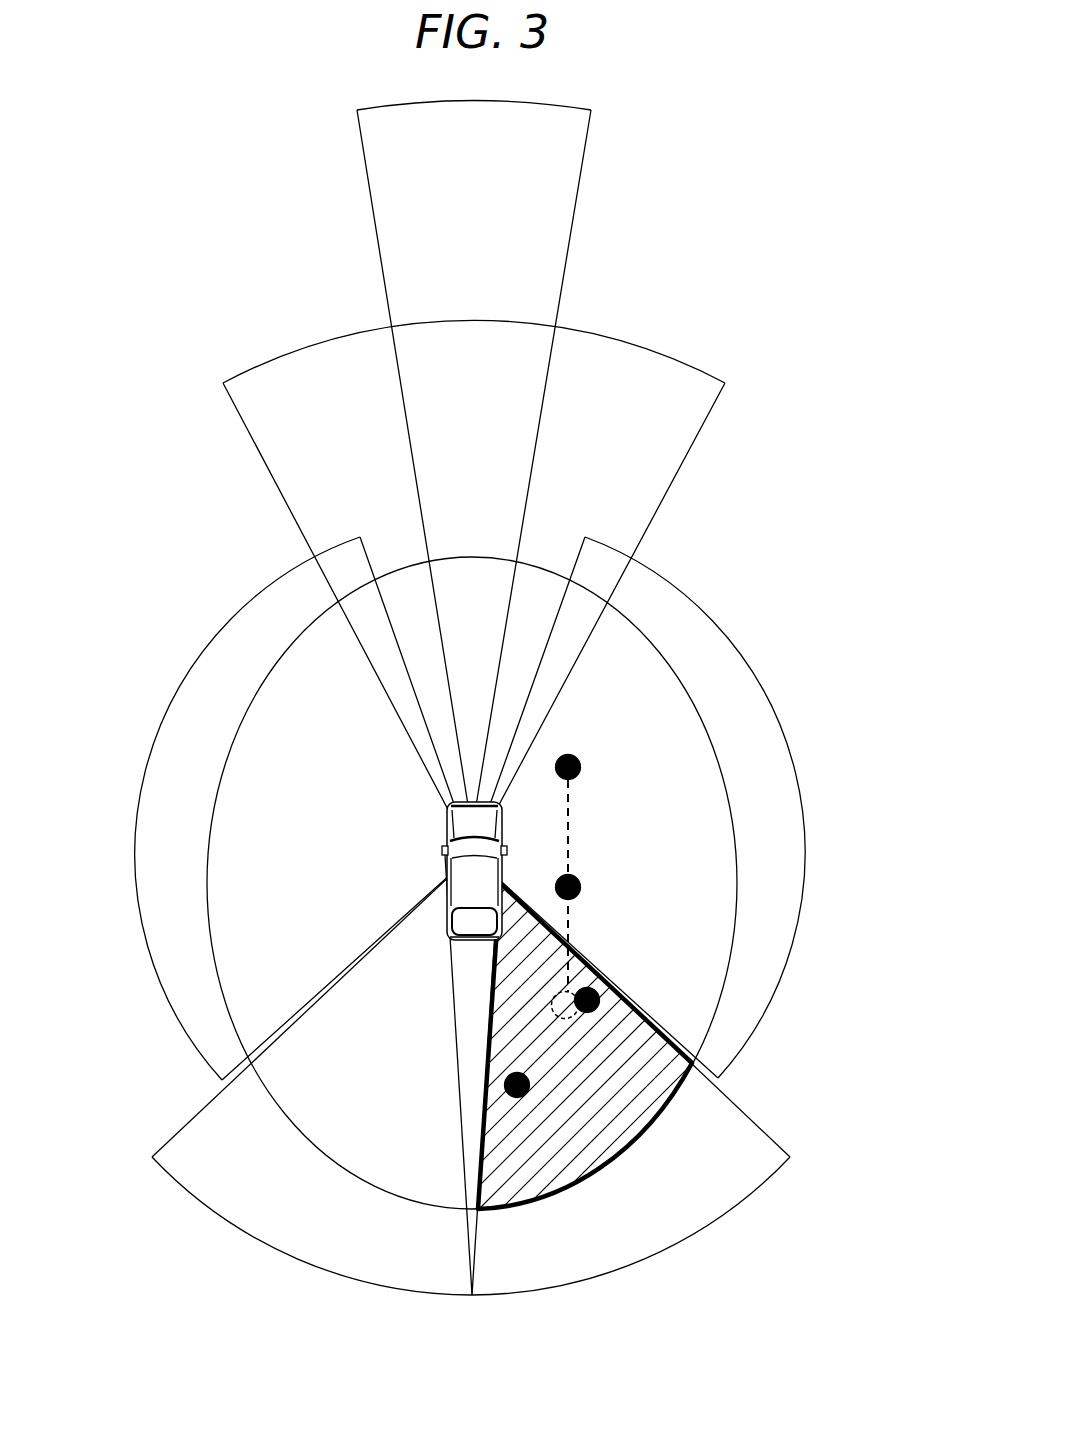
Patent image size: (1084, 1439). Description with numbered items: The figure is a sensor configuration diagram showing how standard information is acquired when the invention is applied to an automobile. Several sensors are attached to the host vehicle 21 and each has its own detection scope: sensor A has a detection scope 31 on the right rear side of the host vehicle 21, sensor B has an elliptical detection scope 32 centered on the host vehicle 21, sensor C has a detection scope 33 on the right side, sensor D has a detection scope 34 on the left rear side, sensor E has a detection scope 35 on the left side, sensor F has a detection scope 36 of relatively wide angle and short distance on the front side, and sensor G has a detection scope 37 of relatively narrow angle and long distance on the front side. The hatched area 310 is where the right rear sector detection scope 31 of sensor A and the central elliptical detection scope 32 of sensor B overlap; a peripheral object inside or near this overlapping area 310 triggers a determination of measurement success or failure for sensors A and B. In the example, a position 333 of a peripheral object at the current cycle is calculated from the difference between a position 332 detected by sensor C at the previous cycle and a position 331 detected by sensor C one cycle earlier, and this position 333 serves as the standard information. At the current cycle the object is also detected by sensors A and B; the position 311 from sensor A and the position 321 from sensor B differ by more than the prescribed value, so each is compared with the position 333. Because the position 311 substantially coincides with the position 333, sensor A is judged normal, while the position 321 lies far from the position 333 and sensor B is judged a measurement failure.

The host vehicle 21 is at (468, 890).
The detection scope 31 is at (757, 1192).
The elliptical detection scope 32 is at (740, 860).
The detection scope 33 is at (723, 632).
The detection scope 34 is at (185, 1192).
The detection scope 35 is at (218, 635).
The detection scope 36 is at (709, 412).
The detection scope 37 is at (583, 160).
The overlapping area 310 is at (550, 1198).
The position 311 is at (599, 1004).
The position 321 is at (529, 1087).
The position 331 is at (579, 756).
The position 332 is at (580, 886).
The position 333 is at (577, 1026).